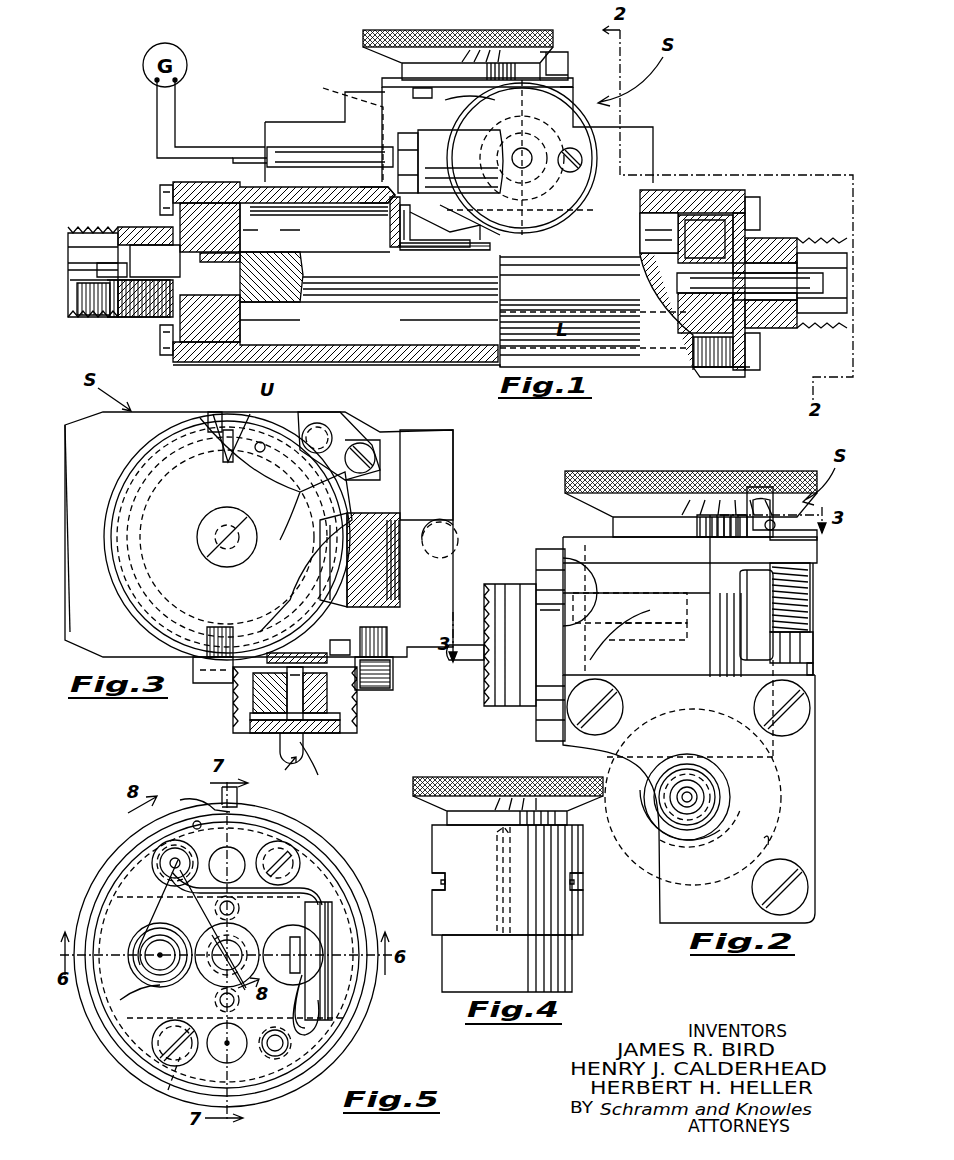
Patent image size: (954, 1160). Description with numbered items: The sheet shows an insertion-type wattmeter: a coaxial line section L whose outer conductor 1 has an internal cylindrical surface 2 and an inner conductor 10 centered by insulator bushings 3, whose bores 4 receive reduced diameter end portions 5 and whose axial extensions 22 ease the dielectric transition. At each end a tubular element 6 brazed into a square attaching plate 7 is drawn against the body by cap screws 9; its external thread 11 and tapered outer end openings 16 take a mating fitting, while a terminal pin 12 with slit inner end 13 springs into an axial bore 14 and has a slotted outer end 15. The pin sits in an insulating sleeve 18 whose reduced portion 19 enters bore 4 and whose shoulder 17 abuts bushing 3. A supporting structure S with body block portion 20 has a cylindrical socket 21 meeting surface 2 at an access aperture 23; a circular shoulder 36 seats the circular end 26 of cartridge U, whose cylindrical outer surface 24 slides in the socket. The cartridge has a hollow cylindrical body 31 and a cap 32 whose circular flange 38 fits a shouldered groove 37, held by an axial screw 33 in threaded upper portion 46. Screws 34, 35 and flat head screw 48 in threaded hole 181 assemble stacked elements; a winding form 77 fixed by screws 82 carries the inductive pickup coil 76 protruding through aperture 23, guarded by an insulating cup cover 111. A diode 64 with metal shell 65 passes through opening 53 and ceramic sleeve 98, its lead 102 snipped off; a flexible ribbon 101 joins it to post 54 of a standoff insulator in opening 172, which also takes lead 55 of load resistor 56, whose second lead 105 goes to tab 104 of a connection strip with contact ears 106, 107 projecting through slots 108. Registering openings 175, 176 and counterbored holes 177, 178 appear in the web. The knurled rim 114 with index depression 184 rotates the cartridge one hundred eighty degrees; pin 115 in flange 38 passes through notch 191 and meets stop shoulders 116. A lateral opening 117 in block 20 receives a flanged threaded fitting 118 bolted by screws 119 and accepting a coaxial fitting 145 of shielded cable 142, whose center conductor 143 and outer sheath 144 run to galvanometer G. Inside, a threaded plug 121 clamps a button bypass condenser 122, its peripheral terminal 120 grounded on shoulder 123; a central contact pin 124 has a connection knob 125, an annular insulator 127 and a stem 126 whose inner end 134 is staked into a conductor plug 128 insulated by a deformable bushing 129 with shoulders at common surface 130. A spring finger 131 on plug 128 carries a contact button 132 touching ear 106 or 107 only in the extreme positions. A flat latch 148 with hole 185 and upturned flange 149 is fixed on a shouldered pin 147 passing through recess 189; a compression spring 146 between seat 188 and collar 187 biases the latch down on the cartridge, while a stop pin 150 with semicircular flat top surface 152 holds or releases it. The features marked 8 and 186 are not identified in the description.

In FIG. 1, the outer conductor 1 is at (440, 364).
In FIG. 1, the internal cylindrical surface 2 is at (410, 345).
In FIG. 2, the internal cylindrical surface 2 is at (772, 840).
In FIG. 1, the insulator bushings 3 is at (248, 332).
In FIG. 1, the internal bores 4 is at (676, 265).
In FIG. 1, the reduced diameter end portions 5 is at (456, 268).
In FIG. 1, the tubular metal element 6 is at (122, 227).
In FIG. 1, the attaching plate 7 is at (180, 184).
In FIG. 2, the attaching plate 7 is at (808, 812).
In FIG. 1, the cap 8 is at (740, 376).
In FIG. 1, the cap screws 9 is at (162, 190).
In FIG. 2, the cap screws 9 is at (625, 706).
In FIG. 1, the inner conductor 10 is at (342, 240).
In FIG. 2, the inner conductor 10 is at (722, 812).
In FIG. 1, the external thread 11 is at (96, 320).
In FIG. 2, the external thread 11 is at (695, 842).
In FIG. 1, the terminal pins 12 is at (766, 245).
In FIG. 1, the tapering inner ends 13 is at (668, 290).
In FIG. 1, the axial bores 14 is at (456, 278).
In FIG. 1, the outer ends 15 is at (78, 230).
In FIG. 2, the outer ends 15 is at (689, 785).
In FIG. 1, the tapered outer end openings 16 is at (806, 345).
In FIG. 1, the radial shoulder 17 is at (750, 283).
In FIG. 1, the insulating sleeve 18 is at (735, 352).
In FIG. 1, the reduced diameter portion 19 is at (705, 237).
In FIG. 1, the body block portion 20 is at (642, 128).
In FIG. 2, the body block portion 20 is at (668, 563).
In FIG. 1, the cylindrical socket 21 is at (385, 84).
In FIG. 3, the cylindrical socket 21 is at (263, 442).
In FIG. 2, the cylindrical socket 21 is at (665, 556).
In FIG. 1, the axial extensions 22 is at (250, 318).
In FIG. 1, the access aperture 23 is at (319, 220).
In FIG. 1, the cylindrical outer surface 24 is at (330, 90).
In FIG. 2, the cylindrical outer surface 24 is at (583, 542).
In FIG. 4, the cylindrical outer surface 24 is at (479, 922).
In FIG. 4, the circular end 26 is at (580, 945).
In FIG. 4, the hollow cylindrical body member 31 is at (585, 915).
In FIG. 5, the hollow cylindrical body member 31 is at (138, 828).
In FIG. 1, the cap member 32 is at (432, 30).
In FIG. 3, the cap member 32 is at (112, 505).
In FIG. 2, the cap member 32 is at (635, 472).
In FIG. 4, the cap member 32 is at (490, 780).
In FIG. 3, the axial machine screw 33 is at (200, 525).
In FIG. 5, the axial machine screw 33 is at (240, 908).
In FIG. 5, the assembling machine screw 34 is at (165, 1062).
In FIG. 5, the assembling machine screw 35 is at (290, 847).
In FIG. 1, the circular shoulder 36 is at (358, 192).
In FIG. 2, the circular shoulder 36 is at (714, 673).
In FIG. 3, the shouldered groove 37 is at (145, 530).
In FIG. 3, the circular flange 38 is at (265, 470).
In FIG. 5, the threaded upper portion 46 is at (210, 975).
In FIG. 5, the flat head screw 48 is at (280, 1058).
In FIG. 5, the opening 53 is at (130, 945).
In FIG. 5, the stem portion 54 is at (168, 858).
In FIG. 5, the terminal lead 55 is at (318, 890).
In FIG. 5, the rectifier load resistor 56 is at (333, 995).
In FIG. 5, the rectifier 64 is at (150, 1007).
In FIG. 5, the outer shell body 65 is at (158, 958).
In FIG. 1, the inductive pickup coil 76 is at (412, 248).
In FIG. 1, the winding form 77 is at (455, 250).
In FIG. 5, the screw 82 is at (225, 912).
In FIG. 5, the sleeve 98 is at (153, 1050).
In FIG. 5, the connection ribbon 101 is at (165, 890).
In FIG. 5, the terminal rod 102 is at (120, 1000).
In FIG. 5, the tab 104 is at (283, 925).
In FIG. 5, the second lead 105 is at (312, 1033).
In FIG. 4, the contact ear 106 is at (440, 878).
In FIG. 1, the contact ear 107 is at (558, 136).
In FIG. 3, the contact ear 107 is at (292, 552).
In FIG. 4, the contact ear 107 is at (580, 886).
In FIG. 4, the slots 108 is at (440, 882).
In FIG. 1, the cover 111 is at (395, 248).
In FIG. 4, the cover 111 is at (572, 975).
In FIG. 1, the knurled rim 114 is at (365, 35).
In FIG. 3, the knurled rim 114 is at (128, 470).
In FIG. 2, the knurled rim 114 is at (588, 474).
In FIG. 4, the knurled rim 114 is at (425, 780).
In FIG. 1, the radially projecting pin 115 is at (418, 92).
In FIG. 3, the radially projecting pin 115 is at (215, 415).
In FIG. 4, the radially projecting pin 115 is at (503, 881).
In FIG. 5, the radially projecting pin 115 is at (220, 795).
In FIG. 1, the stop shoulders 116 is at (468, 97).
In FIG. 3, the stop shoulders 116 is at (230, 430).
In FIG. 3, the lateral opening 117 is at (345, 568).
In FIG. 1, the threaded fitting 118 is at (568, 205).
In FIG. 3, the threaded fitting 118 is at (235, 725).
In FIG. 2, the threaded fitting 118 is at (495, 707).
In FIG. 1, the screws 119 is at (583, 170).
In FIG. 3, the screws 119 is at (198, 684).
In FIG. 3, the peripheral terminal 120 is at (343, 730).
In FIG. 3, the externally threaded plug 121 is at (360, 710).
In FIG. 2, the externally threaded plug 121 is at (528, 572).
In FIG. 3, the bypass condenser 122 is at (335, 735).
In FIG. 2, the bypass condenser 122 is at (520, 600).
In FIG. 3, the shoulder 123 is at (258, 728).
In FIG. 1, the central contact pin 124 is at (440, 182).
In FIG. 3, the central contact pin 124 is at (313, 770).
In FIG. 3, the external connection knob 125 is at (279, 771).
In FIG. 2, the external connection knob 125 is at (460, 643).
In FIG. 3, the stem portion 126 is at (342, 647).
In FIG. 3, the annular insulator 127 is at (278, 745).
In FIG. 3, the conductor plug 128 is at (395, 700).
In FIG. 3, the insulator bushing 129 is at (240, 705).
In FIG. 3, the common surface 130 is at (330, 735).
In FIG. 3, the spring finger contactor 131 is at (360, 578).
In FIG. 2, the spring finger contactor 131 is at (640, 640).
In FIG. 3, the contact button 132 is at (348, 548).
In FIG. 2, the contact button 132 is at (640, 620).
In FIG. 3, the inner end 134 is at (236, 630).
In FIG. 1, the shielded cable 142 is at (290, 145).
In FIG. 1, the center conductor 143 is at (157, 115).
In FIG. 1, the outer sheath 144 is at (178, 102).
In FIG. 1, the coaxial line fitting 145 is at (460, 161).
In FIG. 2, the compression spring 146 is at (811, 615).
In FIG. 2, the shouldered pin 147 is at (818, 672).
In FIG. 3, the latch member 148 is at (350, 438).
In FIG. 2, the latch member 148 is at (697, 528).
In FIG. 1, the upturned flange 149 is at (570, 62).
In FIG. 3, the upturned flange 149 is at (378, 490).
In FIG. 2, the upturned flange 149 is at (745, 500).
In FIG. 3, the stop pin 150 is at (376, 458).
In FIG. 2, the stop pin 150 is at (768, 531).
In FIG. 3, the semicircular flat surface 152 is at (380, 442).
In FIG. 2, the semicircular flat surface 152 is at (752, 486).
In FIG. 5, the opening 172 is at (195, 821).
In FIG. 5, the registering opening 175 is at (236, 1058).
In FIG. 5, the registering opening 176 is at (242, 852).
In FIG. 5, the counter-bored hole 177 is at (156, 1093).
In FIG. 5, the counter-bored hole 178 is at (292, 863).
In FIG. 5, the threaded hole 181 is at (275, 1052).
In FIG. 3, the depression 184 is at (125, 580).
In FIG. 3, the hole 185 is at (318, 424).
In FIG. 2, the clip 186 is at (808, 528).
In FIG. 2, the collar 187 is at (780, 647).
In FIG. 2, the seat 188 is at (811, 583).
In FIG. 2, the recess 189 is at (740, 578).
In FIG. 5, the notch 191 is at (180, 800).